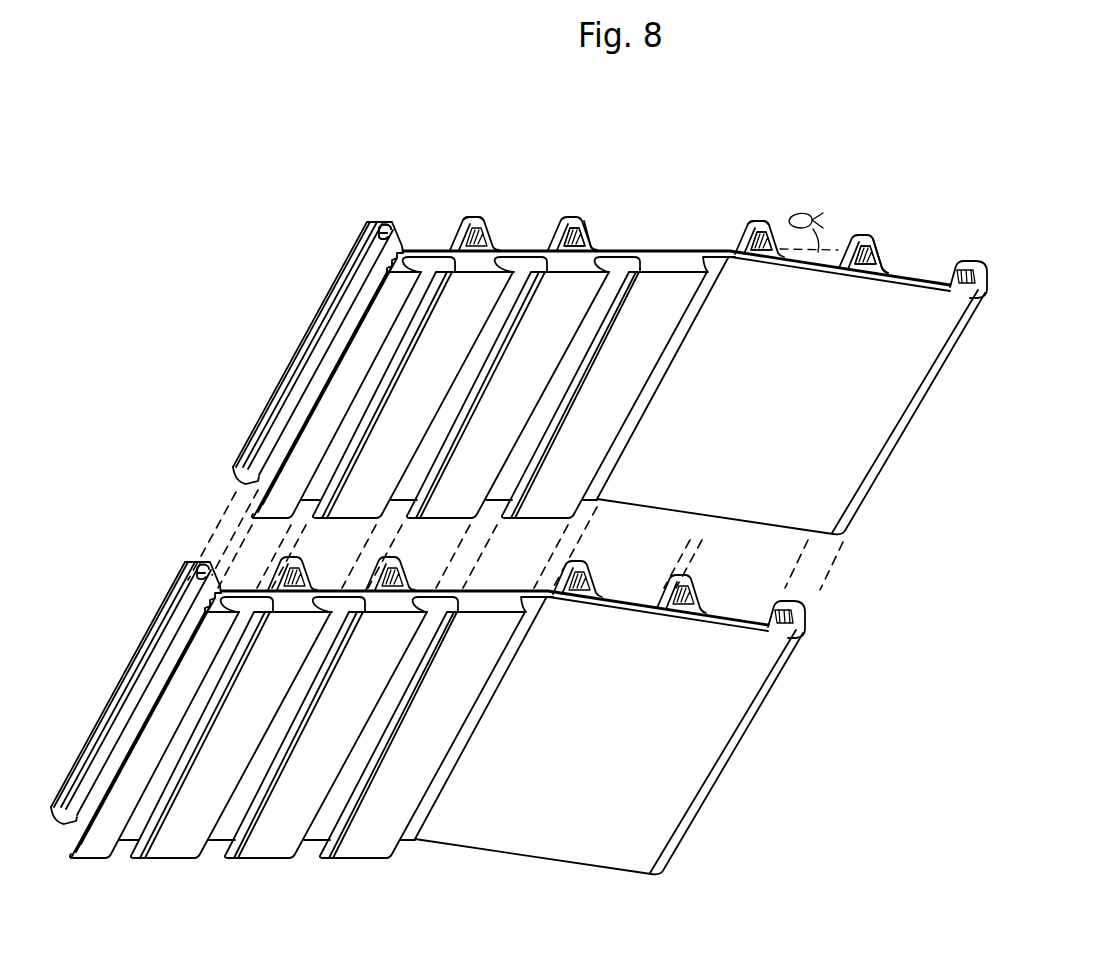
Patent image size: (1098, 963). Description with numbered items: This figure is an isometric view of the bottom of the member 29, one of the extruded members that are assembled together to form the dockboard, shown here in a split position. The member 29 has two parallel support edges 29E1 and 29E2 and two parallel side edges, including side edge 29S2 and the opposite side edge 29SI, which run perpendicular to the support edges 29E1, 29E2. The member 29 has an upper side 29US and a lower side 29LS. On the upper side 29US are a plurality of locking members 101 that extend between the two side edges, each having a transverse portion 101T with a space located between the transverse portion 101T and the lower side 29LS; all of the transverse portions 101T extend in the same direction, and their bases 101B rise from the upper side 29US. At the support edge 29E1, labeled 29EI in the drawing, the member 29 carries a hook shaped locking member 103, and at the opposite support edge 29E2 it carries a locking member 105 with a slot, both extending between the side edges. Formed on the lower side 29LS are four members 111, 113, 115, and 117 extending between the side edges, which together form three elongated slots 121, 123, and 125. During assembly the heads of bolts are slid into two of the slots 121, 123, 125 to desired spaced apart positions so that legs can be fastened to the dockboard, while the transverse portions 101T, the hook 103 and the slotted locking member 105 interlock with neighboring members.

The locking member 105 is at (386, 220).
The member 111 is at (402, 290).
The member 113 is at (472, 262).
The member 115 is at (552, 262).
The member 117 is at (667, 262).
The elongated slot 121 is at (452, 262).
The elongated slot 123 is at (518, 262).
The elongated slot 125 is at (620, 268).
The locking member 101 is at (873, 223).
The transverse portion 101T is at (578, 213).
The base of projection 101B is at (594, 250).
The hook shaped locking member 103 is at (979, 274).
The member 29 is at (836, 396).
The upper side 29US is at (707, 244).
The lower side 29LS is at (732, 282).
The side edge 29SI is at (728, 252).
The support edge 29EI is at (985, 299).
The support edge 29E1 is at (623, 736).
The support edge 29E2 is at (114, 710).
The side edge 29S2 is at (297, 765).